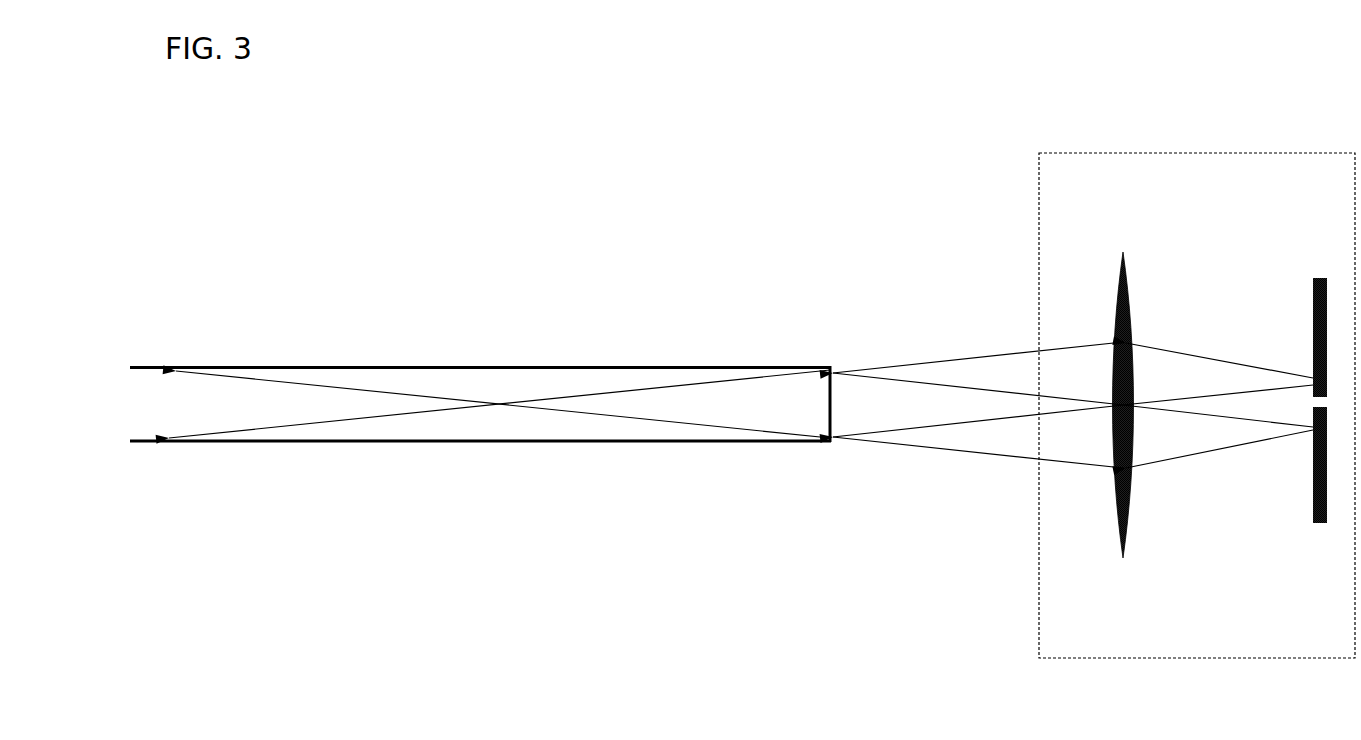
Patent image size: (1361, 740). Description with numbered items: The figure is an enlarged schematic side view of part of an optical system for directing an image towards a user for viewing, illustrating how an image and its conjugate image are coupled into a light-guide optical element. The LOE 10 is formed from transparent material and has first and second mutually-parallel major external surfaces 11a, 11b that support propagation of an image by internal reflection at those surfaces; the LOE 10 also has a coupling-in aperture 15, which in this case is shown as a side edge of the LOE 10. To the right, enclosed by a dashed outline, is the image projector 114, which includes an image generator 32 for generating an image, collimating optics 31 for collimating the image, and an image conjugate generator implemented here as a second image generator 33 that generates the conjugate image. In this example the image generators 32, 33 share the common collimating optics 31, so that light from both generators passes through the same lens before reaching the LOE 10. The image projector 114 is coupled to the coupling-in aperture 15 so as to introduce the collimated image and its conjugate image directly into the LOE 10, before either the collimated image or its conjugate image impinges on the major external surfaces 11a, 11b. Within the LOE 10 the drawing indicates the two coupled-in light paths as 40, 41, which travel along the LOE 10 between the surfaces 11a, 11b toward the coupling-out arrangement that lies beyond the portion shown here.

The LOE 10 is at (518, 379).
The first major external surface 11a is at (478, 364).
The second major external surface 11b is at (480, 444).
The coupling-in aperture 15 is at (838, 405).
The collimating optics 31 is at (1118, 388).
The image generator 32 is at (1312, 485).
The second image generator 33 is at (1317, 315).
The light beam 40 is at (486, 402).
The light beam 41 is at (486, 405).
The image projector 114 is at (956, 150).